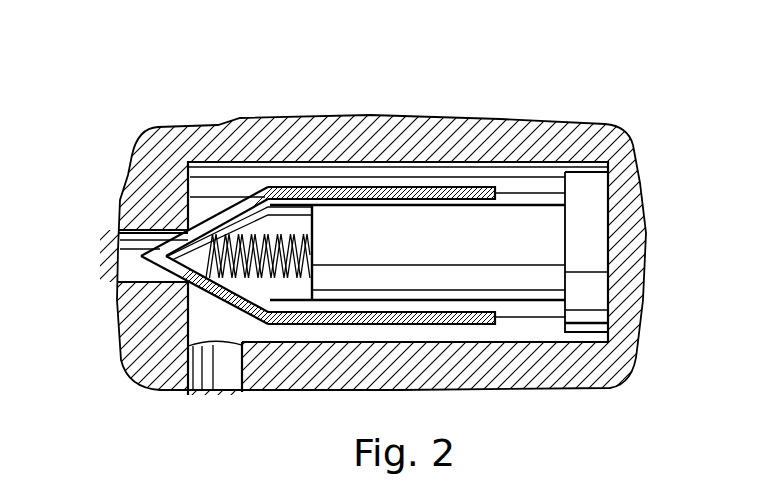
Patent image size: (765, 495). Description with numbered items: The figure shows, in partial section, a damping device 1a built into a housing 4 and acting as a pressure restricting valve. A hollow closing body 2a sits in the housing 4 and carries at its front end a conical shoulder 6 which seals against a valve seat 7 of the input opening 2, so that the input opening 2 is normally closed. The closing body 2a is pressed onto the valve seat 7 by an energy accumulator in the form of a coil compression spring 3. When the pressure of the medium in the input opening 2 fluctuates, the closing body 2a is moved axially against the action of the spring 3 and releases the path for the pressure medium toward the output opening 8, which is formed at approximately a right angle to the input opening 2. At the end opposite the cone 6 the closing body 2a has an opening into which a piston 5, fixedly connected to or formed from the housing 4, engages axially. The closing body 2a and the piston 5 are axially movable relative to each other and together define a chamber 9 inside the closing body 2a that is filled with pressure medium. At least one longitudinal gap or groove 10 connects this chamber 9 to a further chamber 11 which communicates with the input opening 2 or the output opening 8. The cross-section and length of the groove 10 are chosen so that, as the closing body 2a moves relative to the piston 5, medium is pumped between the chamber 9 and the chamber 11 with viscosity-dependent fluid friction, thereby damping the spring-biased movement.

The damping device 1a is at (592, 91).
The input opening 2 is at (135, 272).
The closing body 2a is at (378, 186).
The coil compression spring 3 is at (243, 212).
The housing 4 is at (479, 140).
The piston 5 is at (480, 248).
The conical shoulder 6 is at (160, 232).
The valve seat 7 is at (187, 229).
The output opening 8 is at (228, 370).
The chamber 9 is at (270, 232).
The longitudinal groove 10 is at (407, 200).
The chamber 11 is at (284, 217).